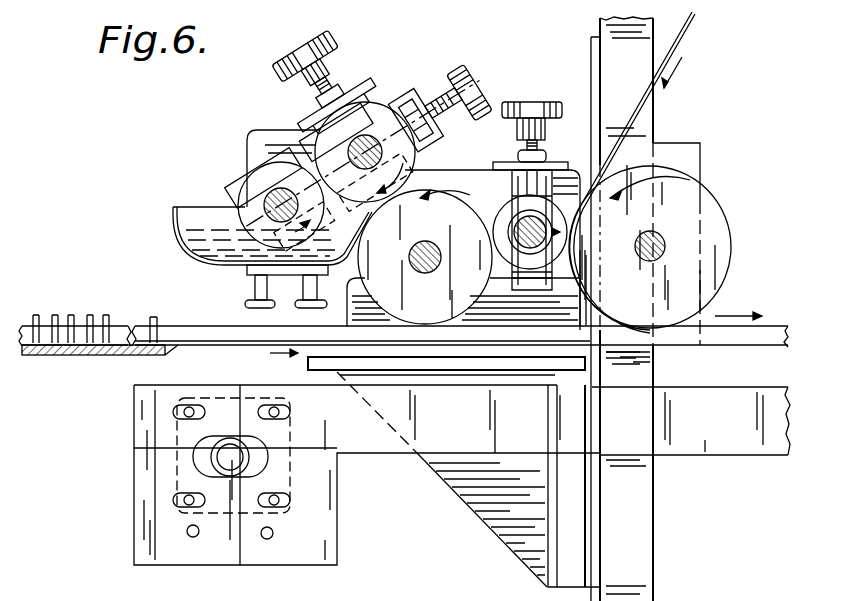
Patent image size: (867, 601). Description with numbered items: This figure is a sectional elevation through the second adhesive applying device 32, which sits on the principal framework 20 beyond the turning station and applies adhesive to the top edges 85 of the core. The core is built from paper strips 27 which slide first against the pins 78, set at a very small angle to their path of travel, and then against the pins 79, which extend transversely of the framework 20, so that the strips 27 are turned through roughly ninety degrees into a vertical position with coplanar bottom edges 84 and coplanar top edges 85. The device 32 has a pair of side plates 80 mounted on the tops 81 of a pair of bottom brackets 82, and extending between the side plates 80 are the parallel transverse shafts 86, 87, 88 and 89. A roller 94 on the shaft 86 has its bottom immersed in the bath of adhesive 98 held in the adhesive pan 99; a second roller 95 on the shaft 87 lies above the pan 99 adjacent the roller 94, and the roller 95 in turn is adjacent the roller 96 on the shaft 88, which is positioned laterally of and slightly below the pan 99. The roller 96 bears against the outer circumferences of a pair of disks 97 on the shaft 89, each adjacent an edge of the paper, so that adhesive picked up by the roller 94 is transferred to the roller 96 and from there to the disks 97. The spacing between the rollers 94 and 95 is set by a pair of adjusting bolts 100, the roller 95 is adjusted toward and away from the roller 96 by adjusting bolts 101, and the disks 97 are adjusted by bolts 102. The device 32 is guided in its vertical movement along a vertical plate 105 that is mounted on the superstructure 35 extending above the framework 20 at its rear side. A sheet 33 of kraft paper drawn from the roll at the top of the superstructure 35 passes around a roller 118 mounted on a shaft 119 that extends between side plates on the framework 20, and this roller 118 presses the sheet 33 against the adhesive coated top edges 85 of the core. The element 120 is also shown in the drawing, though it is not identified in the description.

The principal framework 20 is at (690, 458).
The paper strips 27 is at (94, 357).
The second adhesive applying device 32 is at (379, 85).
The sheet of paper 33 is at (688, 47).
The superstructure 35 is at (646, 119).
The pins 78 is at (106, 313).
The pins 79 is at (153, 317).
The side plates 80 is at (258, 136).
The tops of bottom brackets 81 is at (528, 365).
The bottom brackets 82 is at (460, 488).
The bottom edges 84 is at (134, 387).
The top edges 85 is at (190, 325).
The transverse shaft 86 is at (240, 204).
The transverse shaft 87 is at (427, 153).
The transverse shaft 88 is at (440, 263).
The transverse shaft 89 is at (578, 287).
The roller 94 is at (265, 179).
The second roller 95 is at (323, 131).
The roller 96 is at (447, 214).
The disks 97 is at (501, 223).
The bath of adhesive 98 is at (192, 236).
The adhesive pan 99 is at (172, 211).
The adjusting bolts 100 is at (435, 114).
The adjusting bolts 101 is at (332, 86).
The bolts 102 is at (540, 150).
The vertical plate 105 is at (591, 44).
The roller 118 is at (712, 269).
The shaft 119 is at (663, 239).
The bracket 120 is at (685, 156).